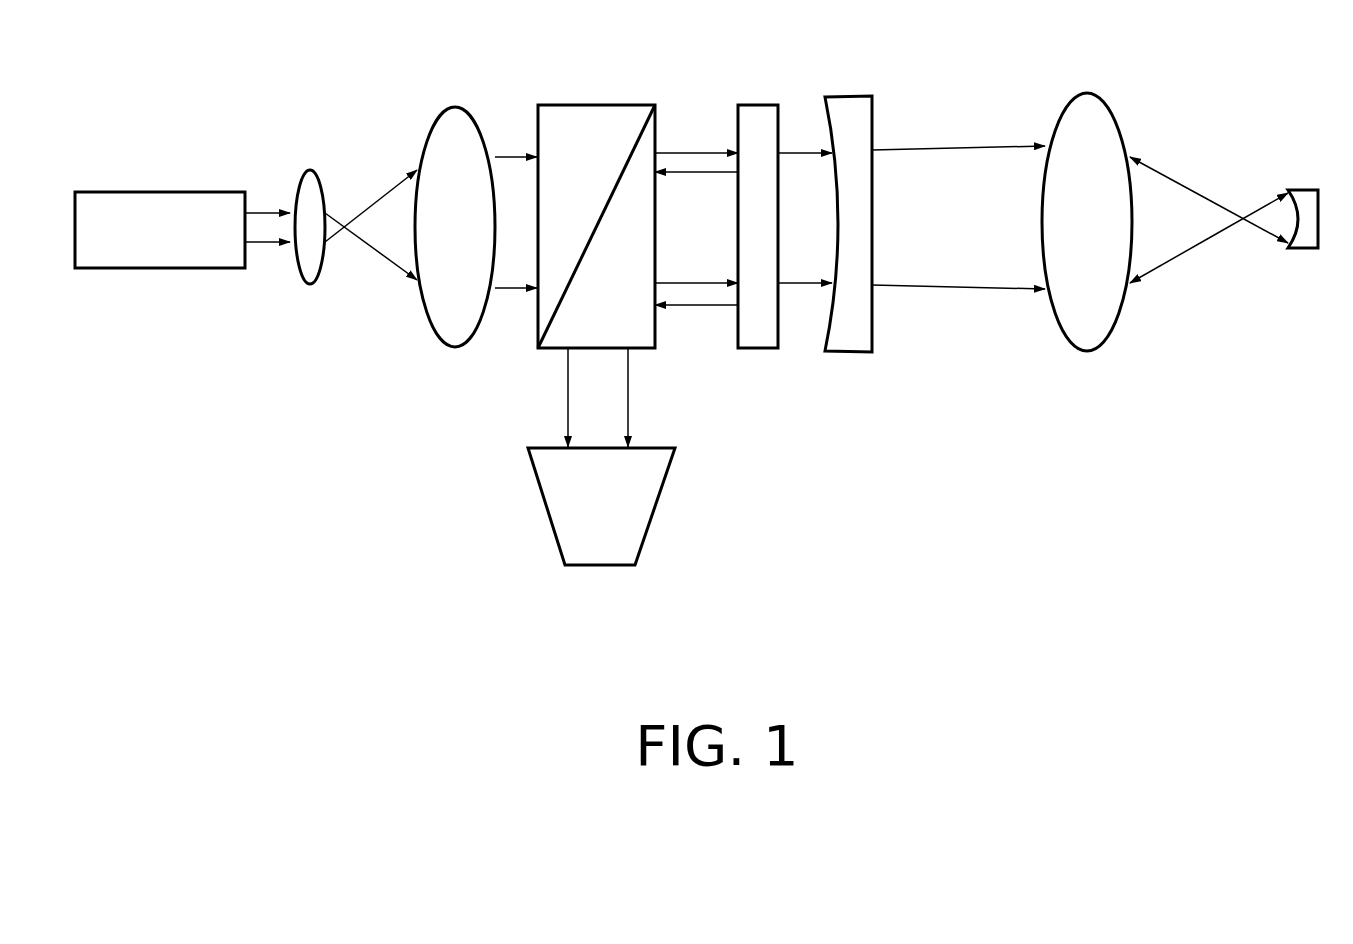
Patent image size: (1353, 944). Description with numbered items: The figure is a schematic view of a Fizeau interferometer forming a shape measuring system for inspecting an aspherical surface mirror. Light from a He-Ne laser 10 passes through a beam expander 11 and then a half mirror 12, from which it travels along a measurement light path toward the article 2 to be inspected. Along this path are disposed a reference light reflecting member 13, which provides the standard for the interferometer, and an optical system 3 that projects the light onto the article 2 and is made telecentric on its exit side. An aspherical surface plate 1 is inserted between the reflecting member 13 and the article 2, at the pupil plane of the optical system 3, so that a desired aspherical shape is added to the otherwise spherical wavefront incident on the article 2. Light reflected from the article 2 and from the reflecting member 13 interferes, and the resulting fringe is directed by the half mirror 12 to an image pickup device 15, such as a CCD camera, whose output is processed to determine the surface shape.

The aspherical surface plate 1 is at (855, 333).
The article to be inspected 2 is at (1313, 225).
The optical system 3 is at (1093, 113).
The He-Ne laser 10 is at (155, 258).
The beam expander 11 is at (493, 350).
The half mirror 12 is at (650, 138).
The reference light reflecting member 13 is at (762, 328).
The image pickup device 15 is at (637, 523).